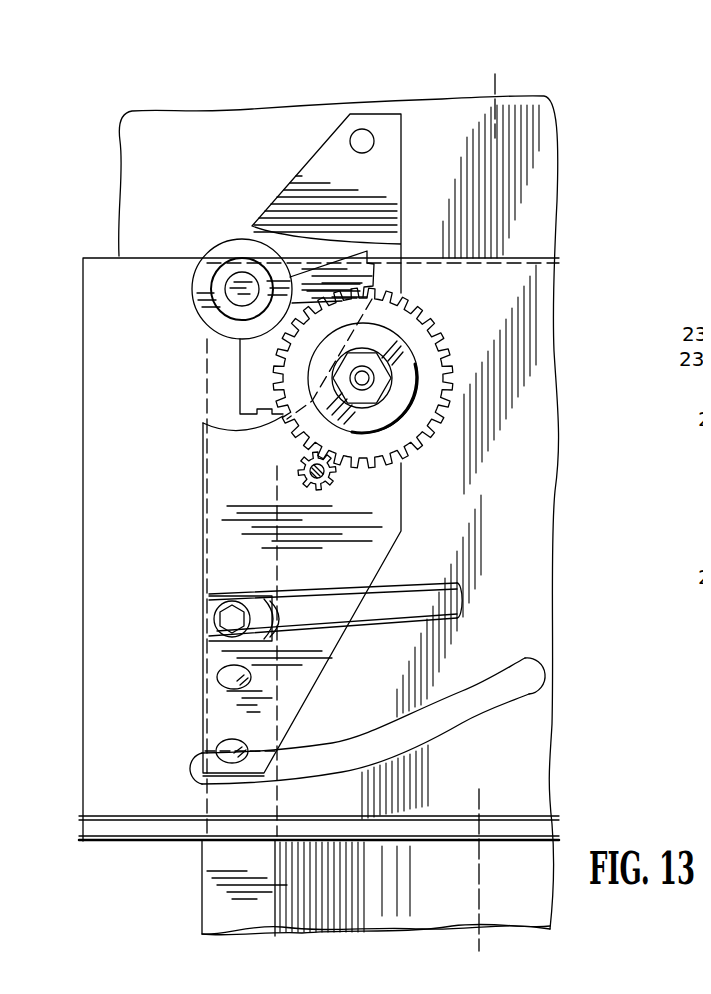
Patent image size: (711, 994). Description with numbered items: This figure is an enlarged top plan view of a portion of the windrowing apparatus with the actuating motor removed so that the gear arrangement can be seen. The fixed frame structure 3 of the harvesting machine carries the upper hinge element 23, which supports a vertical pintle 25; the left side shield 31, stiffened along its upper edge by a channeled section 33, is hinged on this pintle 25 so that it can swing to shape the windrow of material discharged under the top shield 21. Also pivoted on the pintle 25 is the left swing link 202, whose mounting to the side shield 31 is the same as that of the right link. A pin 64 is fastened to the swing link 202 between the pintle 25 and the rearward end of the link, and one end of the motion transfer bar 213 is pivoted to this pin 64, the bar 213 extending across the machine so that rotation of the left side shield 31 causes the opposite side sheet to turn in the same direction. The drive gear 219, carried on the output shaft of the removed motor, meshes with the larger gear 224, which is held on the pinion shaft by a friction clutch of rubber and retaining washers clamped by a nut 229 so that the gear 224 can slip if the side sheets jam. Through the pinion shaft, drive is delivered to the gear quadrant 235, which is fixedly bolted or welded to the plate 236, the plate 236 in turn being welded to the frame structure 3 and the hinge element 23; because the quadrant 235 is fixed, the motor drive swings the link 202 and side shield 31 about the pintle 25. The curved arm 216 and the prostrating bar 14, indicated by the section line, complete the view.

The frame structure 3 is at (530, 190).
The prostrating bar 14 is at (430, 940).
The top shield 21 is at (97, 588).
The upper hinge element 23 is at (216, 285).
The vertical pintle 25 is at (232, 300).
The left side shield 31 is at (287, 903).
The upper edge channeled section 33 is at (213, 850).
The pin 64 is at (210, 625).
The left swing link 202 is at (222, 558).
The motion transfer bar 213 is at (371, 608).
The curved arm 216 is at (494, 716).
The drive gear 219 is at (296, 470).
The gear 224 is at (443, 357).
The hub nut 229 is at (374, 393).
The gear quadrant 235 is at (372, 282).
The plate 236 is at (206, 273).